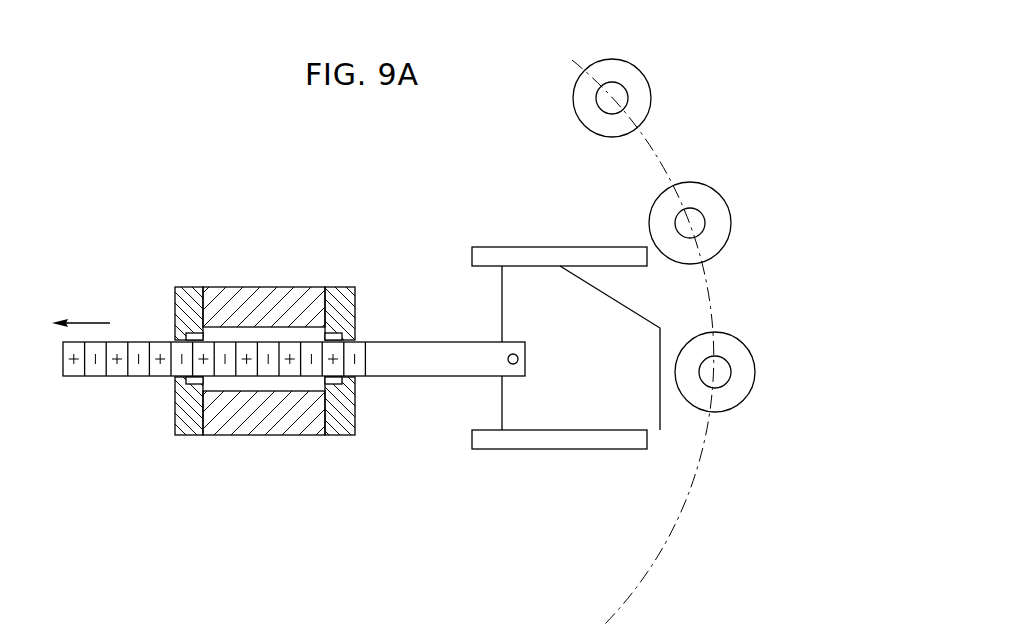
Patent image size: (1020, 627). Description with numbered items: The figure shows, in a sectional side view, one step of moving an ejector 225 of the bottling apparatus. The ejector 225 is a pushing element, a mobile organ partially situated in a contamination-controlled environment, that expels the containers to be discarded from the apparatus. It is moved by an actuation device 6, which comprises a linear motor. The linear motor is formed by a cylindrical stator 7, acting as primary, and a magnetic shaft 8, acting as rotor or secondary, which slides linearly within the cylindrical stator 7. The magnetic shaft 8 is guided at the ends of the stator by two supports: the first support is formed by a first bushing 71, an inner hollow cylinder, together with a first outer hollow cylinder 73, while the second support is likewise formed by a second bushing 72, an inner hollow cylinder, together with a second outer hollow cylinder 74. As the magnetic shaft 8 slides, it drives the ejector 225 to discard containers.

The actuation device 6 is at (170, 244).
The cylindrical stator 7 is at (280, 310).
The magnetic shaft 8 is at (75, 377).
The first bushing 71 is at (350, 333).
The second bushing 72 is at (175, 386).
The first outer hollow cylinder 73 is at (338, 290).
The second outer hollow cylinder 74 is at (175, 301).
The ejector 225 is at (662, 325).